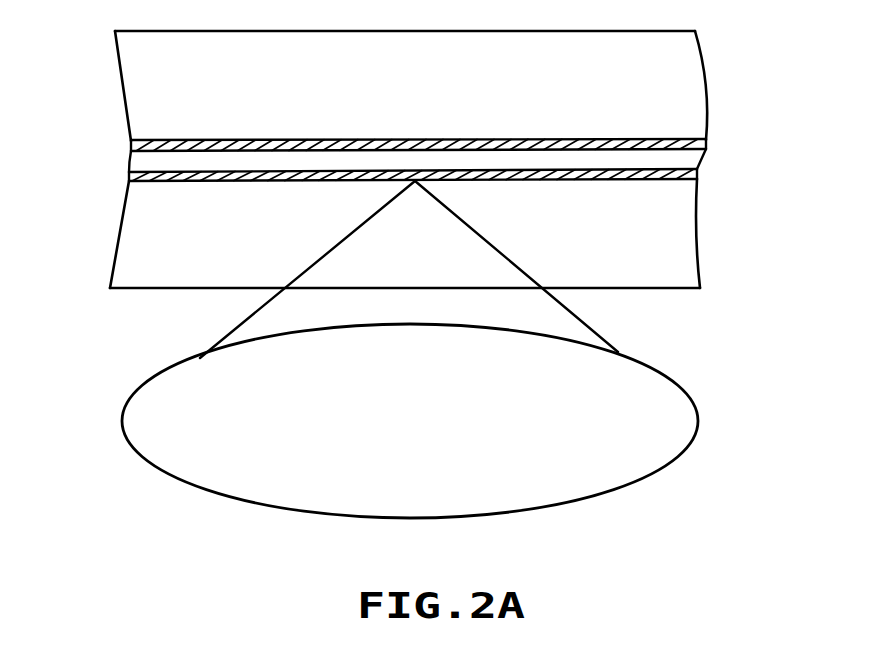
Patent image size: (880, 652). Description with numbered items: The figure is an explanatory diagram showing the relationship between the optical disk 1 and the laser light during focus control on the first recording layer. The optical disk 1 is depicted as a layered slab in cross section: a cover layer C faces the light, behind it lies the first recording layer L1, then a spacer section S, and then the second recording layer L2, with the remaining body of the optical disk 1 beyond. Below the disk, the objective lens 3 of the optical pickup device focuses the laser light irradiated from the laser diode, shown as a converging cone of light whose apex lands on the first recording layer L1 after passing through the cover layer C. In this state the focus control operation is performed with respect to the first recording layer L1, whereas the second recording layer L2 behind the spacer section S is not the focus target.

The optical disk 1 is at (708, 97).
The cover layer C is at (680, 243).
The spacer section S is at (697, 157).
The first recording layer L1 is at (130, 175).
The second recording layer L2 is at (133, 143).
The objective lens 3 is at (682, 418).